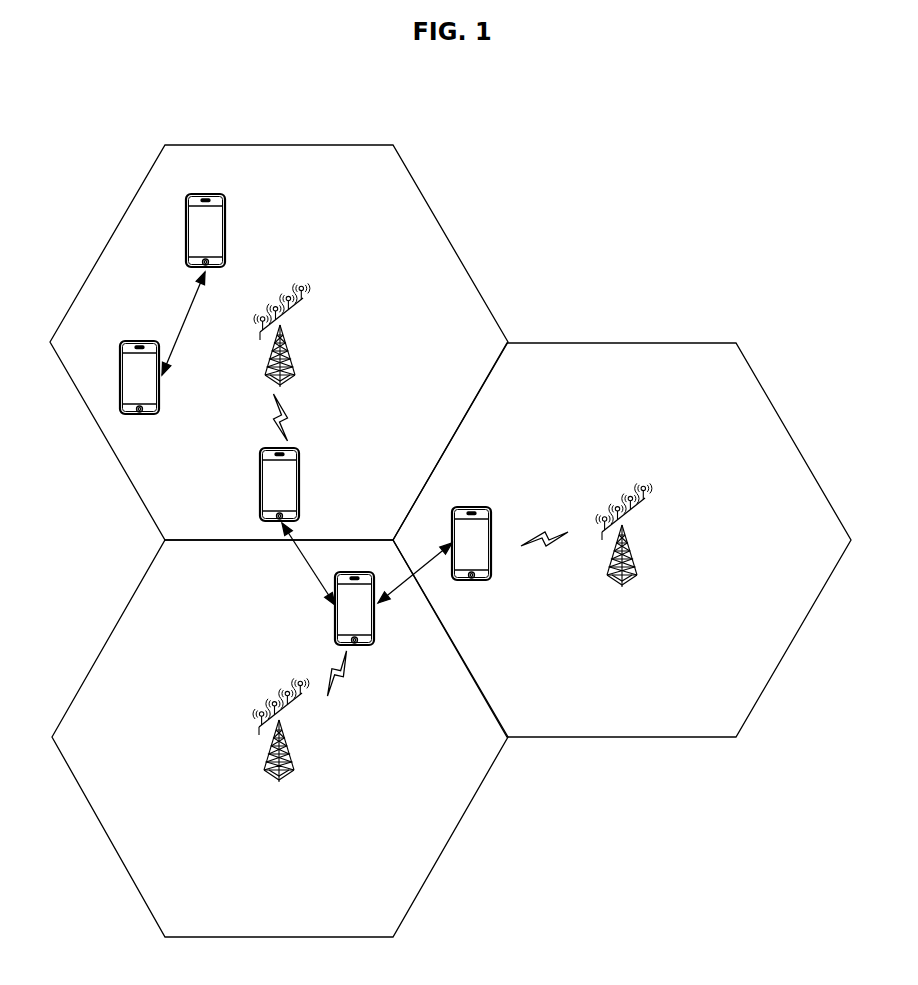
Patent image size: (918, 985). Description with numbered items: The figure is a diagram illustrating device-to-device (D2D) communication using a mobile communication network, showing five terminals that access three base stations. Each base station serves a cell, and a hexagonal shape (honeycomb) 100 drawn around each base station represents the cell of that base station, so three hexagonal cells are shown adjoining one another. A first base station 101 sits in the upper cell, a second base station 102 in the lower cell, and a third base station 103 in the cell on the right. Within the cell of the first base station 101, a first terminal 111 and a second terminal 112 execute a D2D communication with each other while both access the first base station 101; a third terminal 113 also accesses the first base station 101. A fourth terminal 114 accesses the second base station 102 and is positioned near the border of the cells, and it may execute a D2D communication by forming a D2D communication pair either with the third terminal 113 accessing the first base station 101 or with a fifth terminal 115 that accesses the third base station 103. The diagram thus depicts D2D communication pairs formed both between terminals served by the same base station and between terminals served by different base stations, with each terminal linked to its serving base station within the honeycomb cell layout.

The hexagonal shape (honeycomb) 100 is at (280, 145).
The first base station 101 is at (288, 349).
The second base station 102 is at (287, 747).
The third base station 103 is at (633, 549).
The first terminal 111 is at (139, 341).
The second terminal 112 is at (205, 194).
The third terminal 113 is at (260, 482).
The fourth terminal 114 is at (352, 572).
The fifth terminal 115 is at (470, 506).